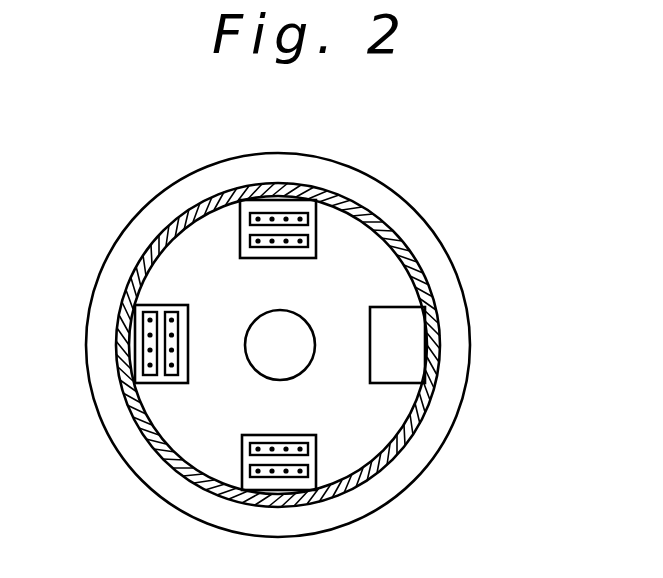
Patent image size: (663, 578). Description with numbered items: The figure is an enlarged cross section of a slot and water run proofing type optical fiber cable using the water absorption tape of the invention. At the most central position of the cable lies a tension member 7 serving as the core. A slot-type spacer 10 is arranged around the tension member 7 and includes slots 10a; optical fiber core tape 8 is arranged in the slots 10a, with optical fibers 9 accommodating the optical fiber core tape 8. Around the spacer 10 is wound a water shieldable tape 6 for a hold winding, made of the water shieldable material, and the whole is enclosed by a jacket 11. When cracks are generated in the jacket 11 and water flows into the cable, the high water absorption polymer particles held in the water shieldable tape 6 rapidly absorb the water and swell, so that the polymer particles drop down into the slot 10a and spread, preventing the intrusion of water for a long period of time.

The water shieldable tape 6 is at (437, 347).
The tension member 7 is at (303, 355).
The optical fiber core tape 8 is at (295, 212).
The optical fibers 9 is at (303, 240).
The slot-type spacer 10 is at (372, 270).
The slot 10a is at (255, 198).
The jacket 11 is at (452, 302).